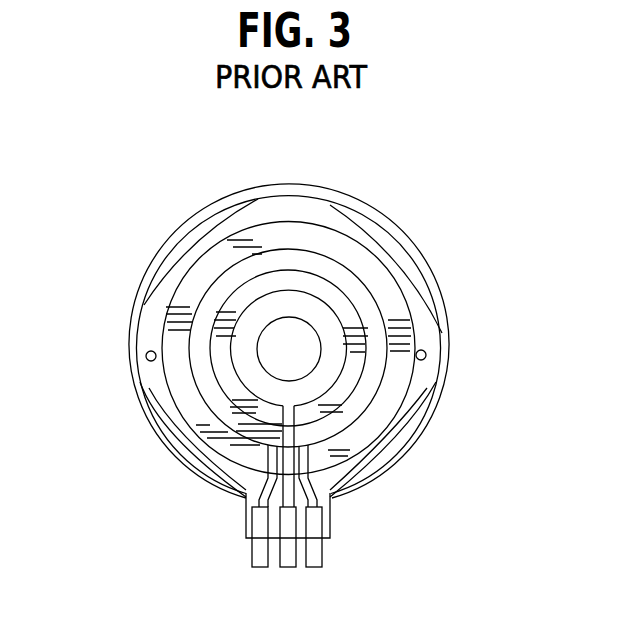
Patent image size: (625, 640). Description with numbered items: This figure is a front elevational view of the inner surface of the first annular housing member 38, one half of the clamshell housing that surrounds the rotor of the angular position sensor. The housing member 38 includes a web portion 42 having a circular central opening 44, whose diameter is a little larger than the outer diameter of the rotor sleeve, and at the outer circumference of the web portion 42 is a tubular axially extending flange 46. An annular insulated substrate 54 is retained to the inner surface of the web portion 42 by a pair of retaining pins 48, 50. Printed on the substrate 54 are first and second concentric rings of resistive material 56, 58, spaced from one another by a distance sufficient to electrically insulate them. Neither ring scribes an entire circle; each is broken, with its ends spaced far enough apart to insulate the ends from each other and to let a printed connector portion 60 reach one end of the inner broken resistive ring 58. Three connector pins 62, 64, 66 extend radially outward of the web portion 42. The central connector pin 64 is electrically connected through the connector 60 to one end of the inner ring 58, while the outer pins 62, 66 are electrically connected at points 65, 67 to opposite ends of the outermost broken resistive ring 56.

The first annular housing member 38 is at (292, 176).
The first concentric ring of resistive material 56 is at (222, 253).
The web portion 42 is at (376, 240).
The tubular axially extending flange 46 is at (452, 300).
The second concentric ring of resistive material 58 is at (237, 303).
The retaining pin 50 is at (426, 355).
The retaining pin 48 is at (148, 361).
The annular insulated substrate 54 is at (152, 337).
The circular central opening 44 is at (272, 368).
The printed connector portion 60 is at (265, 462).
The connection point 65 is at (262, 466).
The connection point 67 is at (320, 462).
The connector pin 62 is at (258, 570).
The central connector pin 64 is at (288, 570).
The connector pin 66 is at (322, 572).